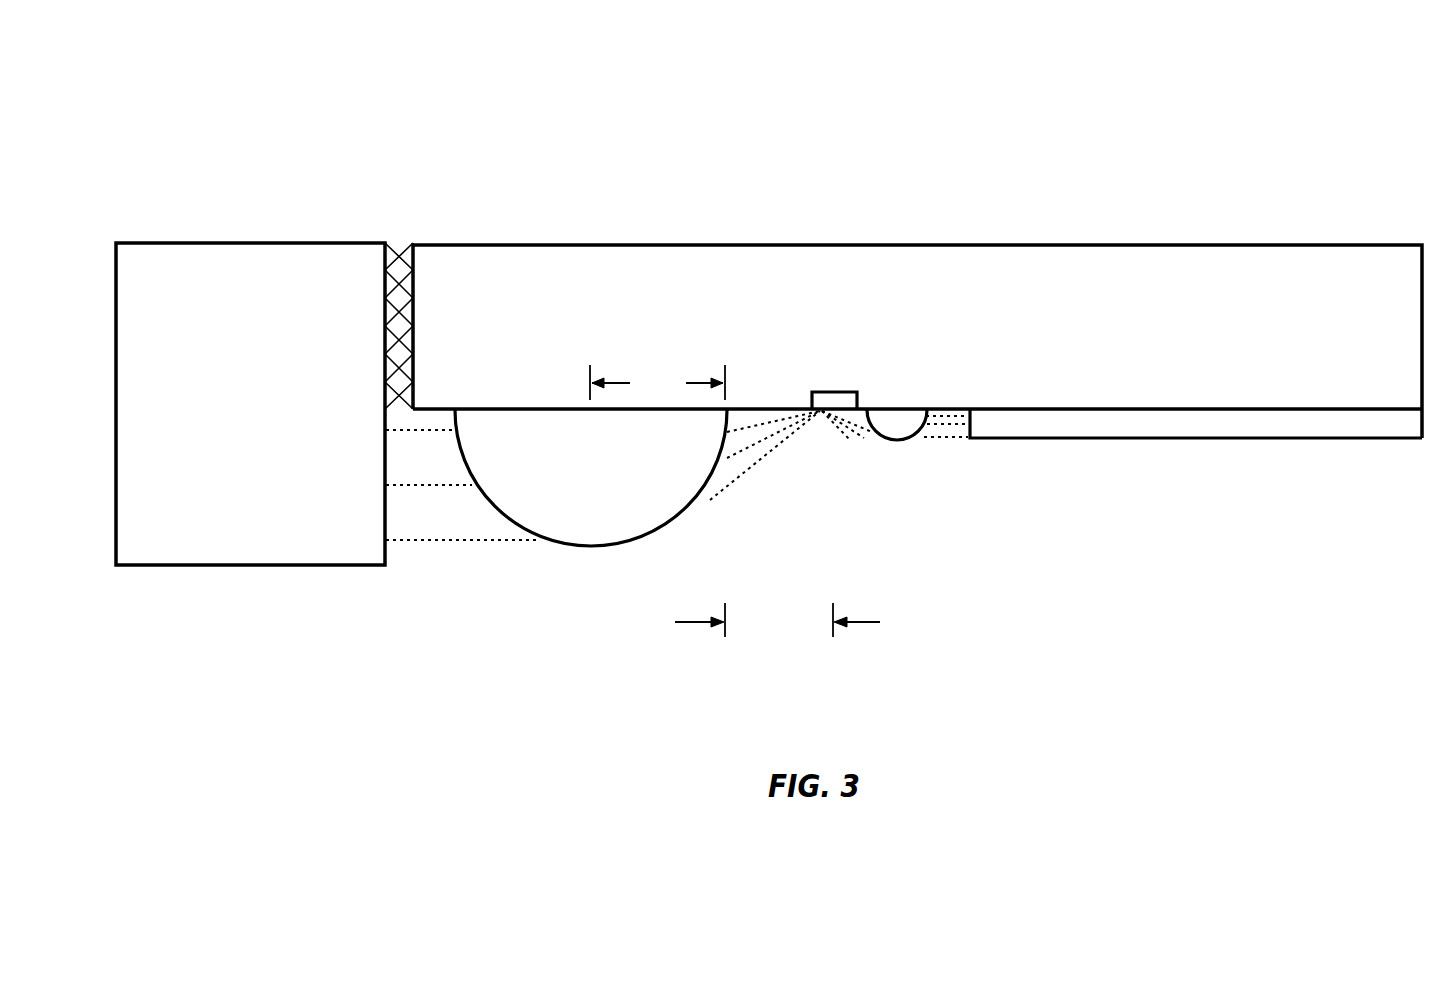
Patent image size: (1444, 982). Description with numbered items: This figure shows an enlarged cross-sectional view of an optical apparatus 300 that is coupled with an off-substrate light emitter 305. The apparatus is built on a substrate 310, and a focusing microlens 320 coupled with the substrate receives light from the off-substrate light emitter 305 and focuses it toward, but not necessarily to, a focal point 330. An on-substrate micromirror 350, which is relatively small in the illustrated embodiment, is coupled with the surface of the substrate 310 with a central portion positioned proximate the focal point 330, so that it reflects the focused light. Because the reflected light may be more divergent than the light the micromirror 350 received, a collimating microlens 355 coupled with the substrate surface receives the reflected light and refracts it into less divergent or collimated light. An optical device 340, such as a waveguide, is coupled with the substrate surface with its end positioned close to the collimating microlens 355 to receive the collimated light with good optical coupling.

The optical apparatus 300 is at (567, 112).
The off-substrate light emitter 305 is at (266, 455).
The substrate 310 is at (939, 343).
The focusing microlens 320 is at (609, 519).
The focal point 330 is at (838, 465).
The optical device 340 is at (1313, 440).
The on-substrate micromirror 350 is at (820, 403).
The collimating microlens 355 is at (900, 440).